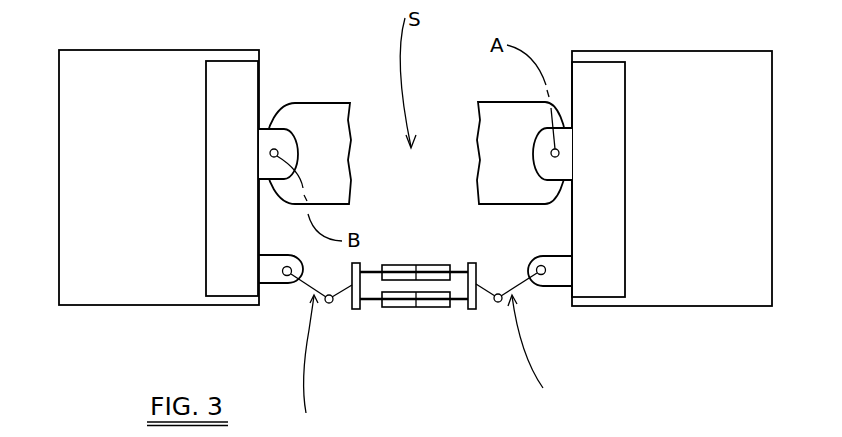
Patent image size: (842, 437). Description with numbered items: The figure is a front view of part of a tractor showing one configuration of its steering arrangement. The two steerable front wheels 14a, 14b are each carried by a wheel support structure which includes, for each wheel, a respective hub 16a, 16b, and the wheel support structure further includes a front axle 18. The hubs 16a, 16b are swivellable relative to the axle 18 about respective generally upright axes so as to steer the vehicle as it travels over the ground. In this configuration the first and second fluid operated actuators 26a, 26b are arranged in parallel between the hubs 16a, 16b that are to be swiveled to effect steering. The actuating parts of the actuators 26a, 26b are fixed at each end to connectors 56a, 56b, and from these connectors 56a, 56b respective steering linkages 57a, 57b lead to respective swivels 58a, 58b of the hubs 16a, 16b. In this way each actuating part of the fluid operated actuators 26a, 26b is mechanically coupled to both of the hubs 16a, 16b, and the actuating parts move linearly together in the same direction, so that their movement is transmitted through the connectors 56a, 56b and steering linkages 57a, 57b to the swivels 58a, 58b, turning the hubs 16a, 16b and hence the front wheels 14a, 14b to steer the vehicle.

The front wheel 14a is at (680, 295).
The front wheel 14b is at (152, 297).
The hub 16a is at (617, 147).
The hub 16b is at (216, 187).
The front axle 18 is at (319, 112).
The first fluid operated actuator 26a is at (395, 265).
The second fluid operated actuator 26b is at (396, 308).
The connector 56a is at (458, 312).
The connector 56b is at (357, 310).
The steering linkage 57a is at (544, 348).
The steering linkage 57b is at (294, 359).
The swivel 58a is at (555, 288).
The swivel 58b is at (275, 279).